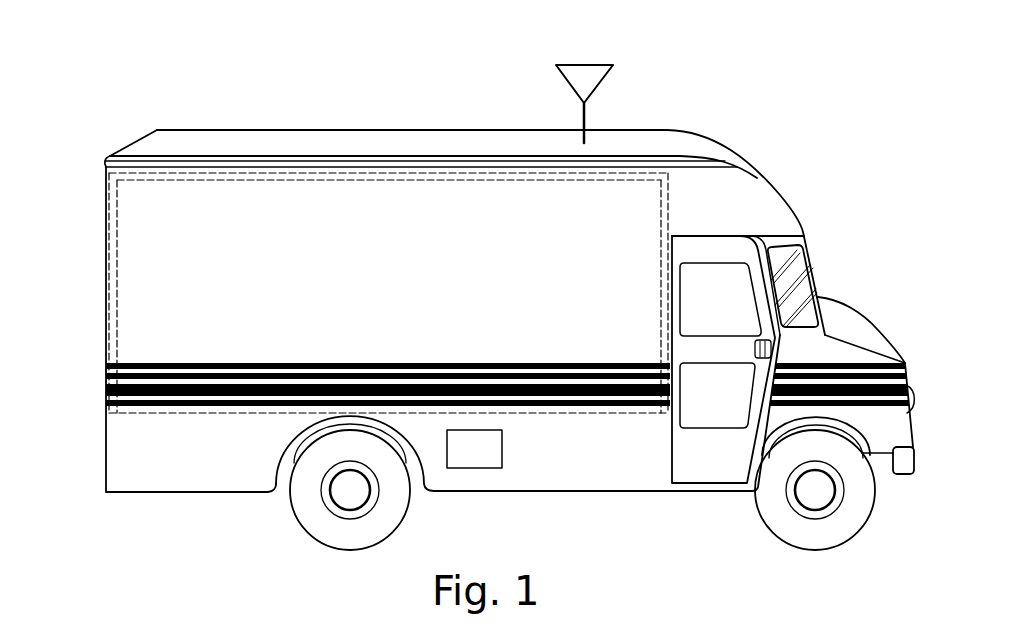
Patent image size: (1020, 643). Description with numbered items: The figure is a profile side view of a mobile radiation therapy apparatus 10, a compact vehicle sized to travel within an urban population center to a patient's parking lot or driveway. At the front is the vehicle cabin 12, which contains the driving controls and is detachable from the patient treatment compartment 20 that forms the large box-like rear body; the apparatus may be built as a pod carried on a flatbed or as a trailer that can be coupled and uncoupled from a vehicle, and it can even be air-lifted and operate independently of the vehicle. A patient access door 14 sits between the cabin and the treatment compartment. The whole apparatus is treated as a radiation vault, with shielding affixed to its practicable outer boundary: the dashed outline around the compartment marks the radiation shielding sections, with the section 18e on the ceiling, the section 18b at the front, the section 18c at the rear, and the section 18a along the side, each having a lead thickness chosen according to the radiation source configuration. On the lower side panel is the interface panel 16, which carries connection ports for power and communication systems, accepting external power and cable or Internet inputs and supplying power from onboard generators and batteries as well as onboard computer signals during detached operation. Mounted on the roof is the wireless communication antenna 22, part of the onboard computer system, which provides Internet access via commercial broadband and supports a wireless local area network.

The mobile radiation therapy apparatus 10 is at (224, 116).
The vehicle cabin 12 is at (818, 282).
The patient access door 14 is at (702, 477).
The interface panel 16 is at (463, 459).
The radiation shielding section 18a is at (180, 413).
The radiation shielding section 18b is at (668, 218).
The radiation shielding section 18c is at (107, 230).
The radiation shielding section 18e is at (392, 172).
The patient treatment compartment 20 is at (391, 291).
The wireless communication antenna 22 is at (600, 85).